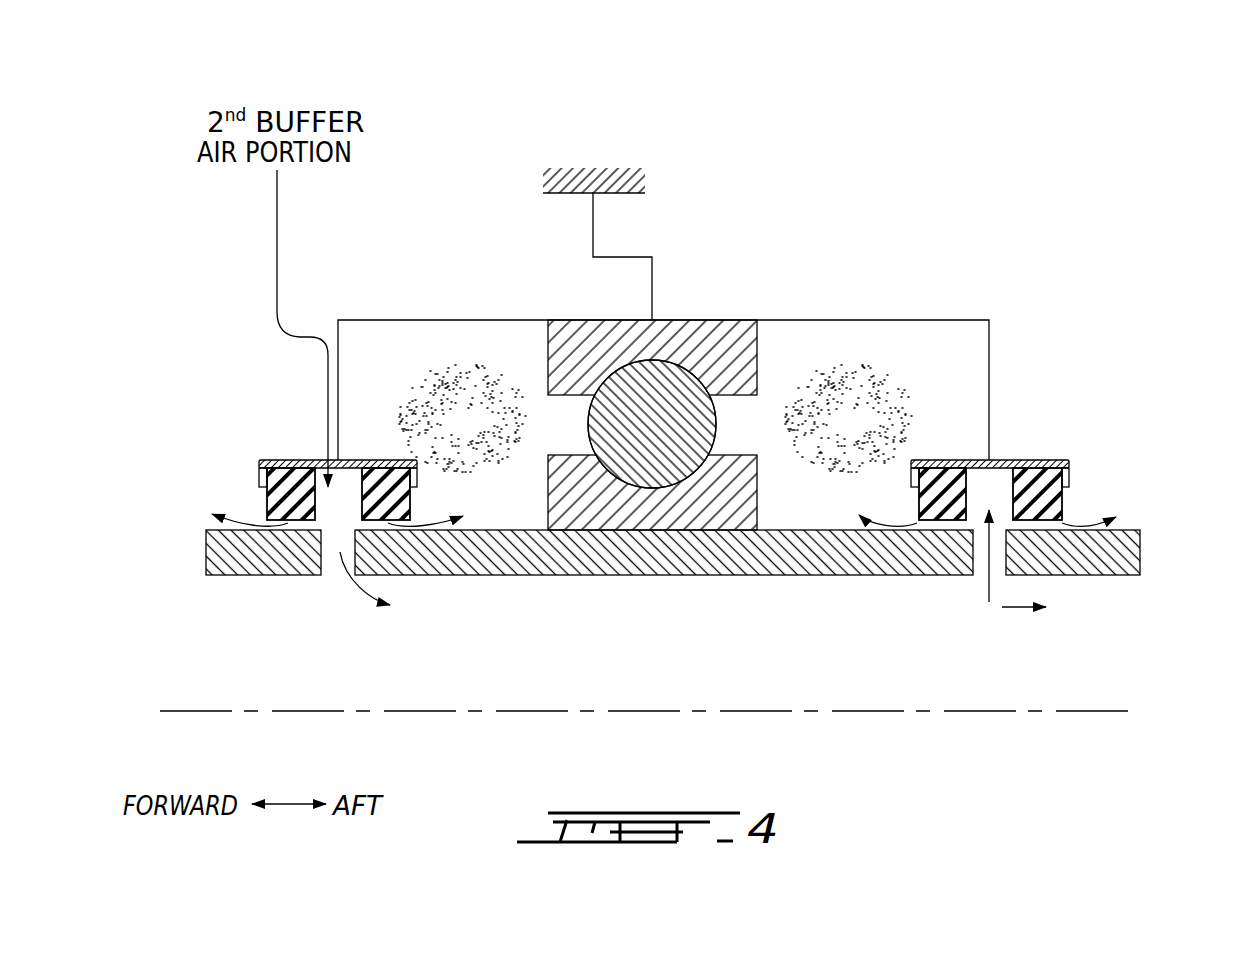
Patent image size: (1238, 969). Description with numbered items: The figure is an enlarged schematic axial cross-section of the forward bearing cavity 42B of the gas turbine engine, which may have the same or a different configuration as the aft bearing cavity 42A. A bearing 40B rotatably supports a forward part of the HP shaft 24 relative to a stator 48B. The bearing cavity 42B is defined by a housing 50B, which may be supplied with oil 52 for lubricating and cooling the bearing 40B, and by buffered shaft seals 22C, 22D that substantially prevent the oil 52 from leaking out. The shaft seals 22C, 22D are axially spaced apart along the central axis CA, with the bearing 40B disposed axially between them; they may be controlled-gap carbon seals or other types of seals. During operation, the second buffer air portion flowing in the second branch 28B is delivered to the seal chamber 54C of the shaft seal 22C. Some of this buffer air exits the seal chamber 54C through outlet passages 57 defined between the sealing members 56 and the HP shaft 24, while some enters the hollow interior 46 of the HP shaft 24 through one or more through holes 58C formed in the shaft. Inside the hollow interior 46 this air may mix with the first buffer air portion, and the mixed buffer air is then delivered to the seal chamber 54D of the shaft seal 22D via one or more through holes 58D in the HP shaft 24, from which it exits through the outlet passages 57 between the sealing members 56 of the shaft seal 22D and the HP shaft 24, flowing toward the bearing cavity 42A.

The second branch 28B is at (277, 228).
The housing 50B is at (404, 320).
The stator 48B is at (557, 195).
The bearing 40B is at (708, 292).
The forward bearing cavity 42B is at (838, 340).
The oil 52 is at (472, 421).
The shaft seal 22C is at (302, 425).
The shaft seal 22D is at (1053, 404).
The seal chamber 54C is at (330, 500).
The seal chamber 54D is at (1062, 466).
The sealing members 56 is at (267, 478).
The outlet passages 57 is at (265, 512).
The HP shaft 24 is at (206, 543).
The hollow interior 46 is at (298, 620).
The through holes 58C is at (332, 562).
The through holes 58D is at (981, 574).
The aft bearing cavity 42A is at (1099, 623).
The central axis CA is at (737, 710).